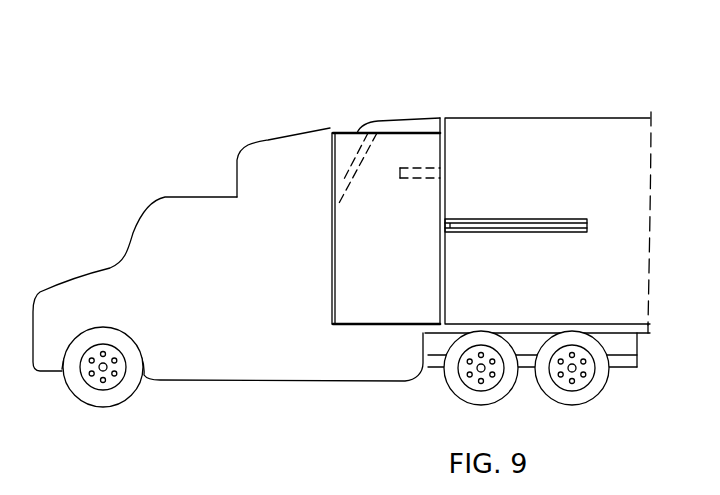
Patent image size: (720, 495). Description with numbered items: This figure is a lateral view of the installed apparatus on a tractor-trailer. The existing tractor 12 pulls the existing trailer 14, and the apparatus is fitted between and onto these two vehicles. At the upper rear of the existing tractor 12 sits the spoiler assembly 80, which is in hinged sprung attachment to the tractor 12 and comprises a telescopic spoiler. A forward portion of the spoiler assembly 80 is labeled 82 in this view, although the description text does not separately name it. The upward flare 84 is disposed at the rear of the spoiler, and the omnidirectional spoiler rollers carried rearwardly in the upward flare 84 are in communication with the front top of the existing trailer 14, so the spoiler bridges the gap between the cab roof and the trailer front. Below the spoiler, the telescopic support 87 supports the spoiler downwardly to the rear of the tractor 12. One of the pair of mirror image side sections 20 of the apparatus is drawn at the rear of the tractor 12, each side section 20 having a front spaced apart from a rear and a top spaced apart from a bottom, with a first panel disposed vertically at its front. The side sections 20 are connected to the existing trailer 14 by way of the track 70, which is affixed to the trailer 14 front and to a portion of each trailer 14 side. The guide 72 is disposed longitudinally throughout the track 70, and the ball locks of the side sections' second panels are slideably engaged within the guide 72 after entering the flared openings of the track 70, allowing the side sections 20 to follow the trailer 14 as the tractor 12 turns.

The existing tractor 12 is at (265, 150).
The existing trailer 14 is at (565, 132).
The side section 20 is at (377, 326).
The track 70 is at (573, 235).
The guide 72 is at (587, 220).
The spoiler assembly 80 is at (347, 213).
The front wall 82 is at (336, 128).
The upward flare 84 is at (418, 125).
The telescopic support 87 is at (346, 174).